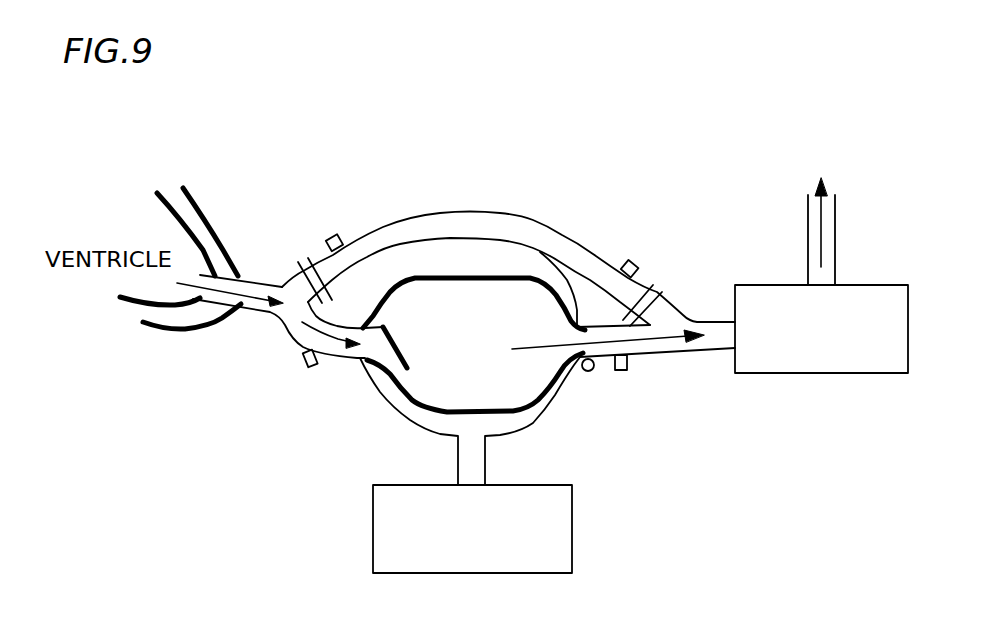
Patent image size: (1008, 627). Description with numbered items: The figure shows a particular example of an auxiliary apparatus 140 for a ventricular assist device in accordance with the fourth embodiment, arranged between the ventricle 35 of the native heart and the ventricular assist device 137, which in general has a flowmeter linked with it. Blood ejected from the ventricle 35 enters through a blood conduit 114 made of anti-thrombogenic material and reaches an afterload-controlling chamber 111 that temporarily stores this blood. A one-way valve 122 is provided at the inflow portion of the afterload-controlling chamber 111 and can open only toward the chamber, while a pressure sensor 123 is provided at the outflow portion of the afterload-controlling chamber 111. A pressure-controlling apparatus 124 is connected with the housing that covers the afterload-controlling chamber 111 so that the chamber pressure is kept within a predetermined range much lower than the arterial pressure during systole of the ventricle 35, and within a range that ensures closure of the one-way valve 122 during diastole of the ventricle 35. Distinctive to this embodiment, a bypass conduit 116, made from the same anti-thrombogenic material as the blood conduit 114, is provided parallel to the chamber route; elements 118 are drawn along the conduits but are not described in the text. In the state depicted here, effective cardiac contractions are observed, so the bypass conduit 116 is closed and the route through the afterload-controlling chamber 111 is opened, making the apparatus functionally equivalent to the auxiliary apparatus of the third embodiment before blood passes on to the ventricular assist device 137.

The ventricle 35 is at (194, 235).
The afterload-controlling chamber 111 is at (545, 397).
The blood conduit 114 is at (262, 275).
The bypass conduit 116 is at (540, 218).
The clamp connector 118 is at (333, 236).
The one-way valve 122 is at (386, 351).
The pressure sensor 123 is at (588, 372).
The pressure-controlling apparatus 124 is at (540, 483).
The ventricular assist device 137 is at (865, 284).
The auxiliary apparatus 140 is at (490, 171).